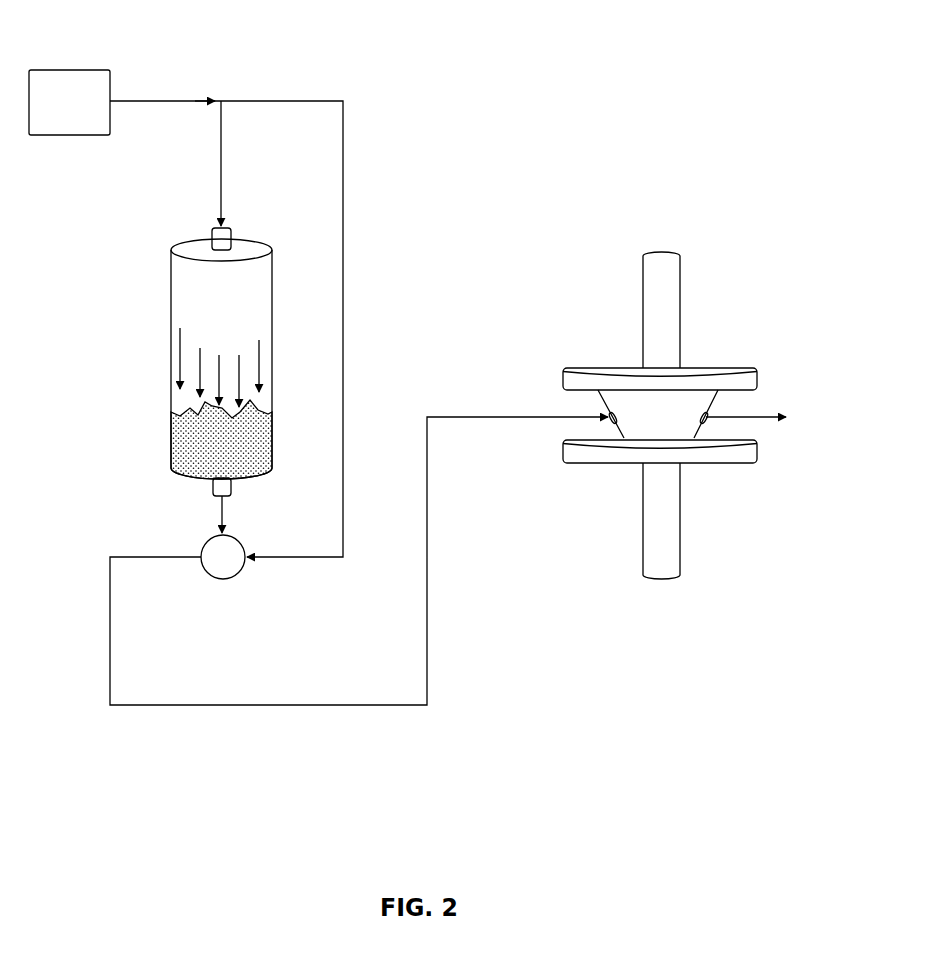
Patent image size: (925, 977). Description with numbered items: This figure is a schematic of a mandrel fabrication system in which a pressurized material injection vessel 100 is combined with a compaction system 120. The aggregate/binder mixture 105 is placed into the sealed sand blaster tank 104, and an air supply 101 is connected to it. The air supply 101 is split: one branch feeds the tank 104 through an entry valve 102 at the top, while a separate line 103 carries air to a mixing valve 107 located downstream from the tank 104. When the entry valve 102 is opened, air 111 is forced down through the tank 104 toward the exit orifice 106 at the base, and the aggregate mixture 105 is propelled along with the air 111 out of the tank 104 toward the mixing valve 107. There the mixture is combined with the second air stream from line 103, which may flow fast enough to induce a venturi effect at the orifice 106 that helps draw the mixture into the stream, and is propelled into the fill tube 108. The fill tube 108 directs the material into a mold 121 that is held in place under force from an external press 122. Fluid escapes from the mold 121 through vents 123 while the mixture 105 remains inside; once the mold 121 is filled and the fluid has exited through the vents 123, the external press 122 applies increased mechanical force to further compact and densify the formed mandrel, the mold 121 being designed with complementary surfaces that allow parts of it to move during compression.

The pressurized material injection vessel 100 is at (93, 353).
The air supply 101 is at (70, 73).
The entry valve 102 is at (212, 232).
The separate line 103 is at (345, 348).
The sand blaster tank 104 is at (171, 278).
The aggregate/binder mixture 105 is at (171, 440).
The exit orifice 106 is at (212, 488).
The mixing valve 107 is at (243, 568).
The fill tube 108 is at (110, 630).
The air 111 is at (171, 363).
The compaction system 120 is at (772, 377).
The mold 121 is at (608, 422).
The external press 122 is at (697, 465).
The vents 123 is at (709, 422).